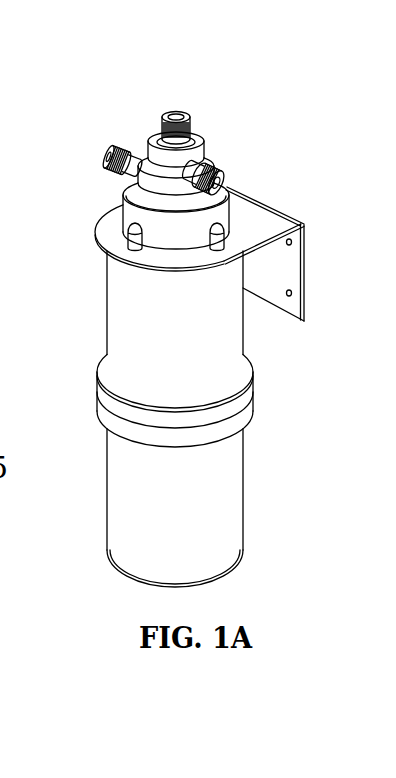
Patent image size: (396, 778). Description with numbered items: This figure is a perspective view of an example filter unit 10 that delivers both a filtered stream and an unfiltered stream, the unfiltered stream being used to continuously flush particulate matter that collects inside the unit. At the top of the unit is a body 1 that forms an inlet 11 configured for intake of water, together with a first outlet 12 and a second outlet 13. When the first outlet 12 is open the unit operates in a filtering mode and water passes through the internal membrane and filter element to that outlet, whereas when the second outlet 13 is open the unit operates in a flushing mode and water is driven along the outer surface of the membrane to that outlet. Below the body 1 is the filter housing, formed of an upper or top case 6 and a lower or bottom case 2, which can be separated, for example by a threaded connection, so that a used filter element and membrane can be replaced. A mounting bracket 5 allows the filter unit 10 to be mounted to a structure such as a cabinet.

The filter unit 10 is at (47, 103).
The body 1 is at (203, 125).
The first outlet 12 is at (174, 112).
The inlet 11 is at (106, 153).
The second outlet 13 is at (226, 168).
The mounting bracket 5 is at (304, 250).
The upper case 6 is at (227, 351).
The lower case 2 is at (230, 492).